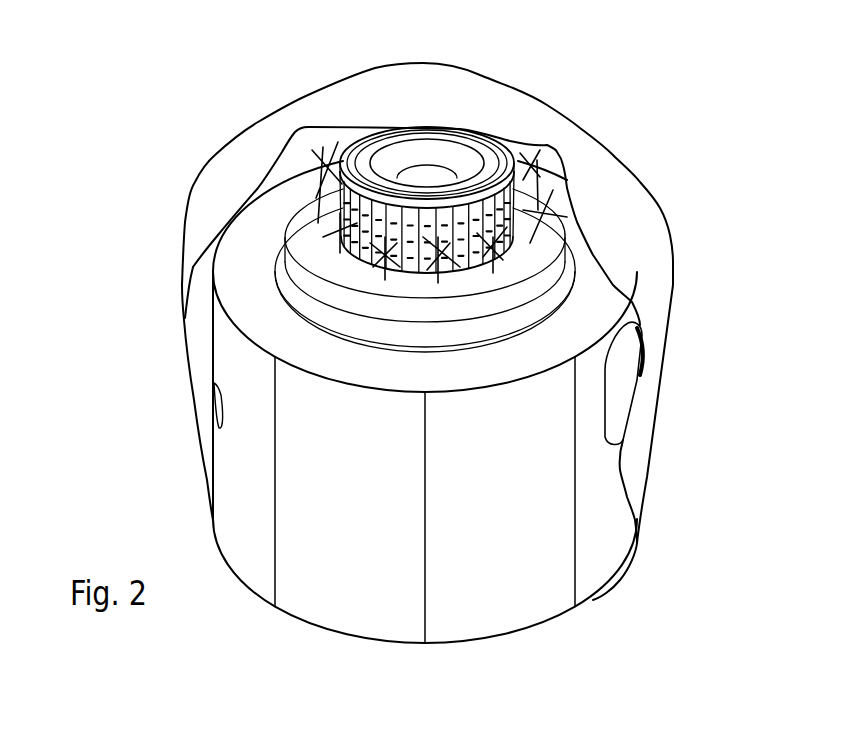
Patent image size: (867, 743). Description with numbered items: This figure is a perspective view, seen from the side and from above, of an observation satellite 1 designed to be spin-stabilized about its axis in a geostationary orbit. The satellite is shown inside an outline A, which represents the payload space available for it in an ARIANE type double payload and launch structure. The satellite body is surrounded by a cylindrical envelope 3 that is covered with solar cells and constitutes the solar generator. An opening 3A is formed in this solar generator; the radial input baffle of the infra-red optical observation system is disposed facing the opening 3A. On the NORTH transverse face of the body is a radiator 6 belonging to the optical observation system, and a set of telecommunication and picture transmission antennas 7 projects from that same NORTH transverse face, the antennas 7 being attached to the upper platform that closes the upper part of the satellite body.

The observation satellite 1 is at (167, 457).
The cylindrical envelope 3 is at (613, 590).
The opening 3A is at (605, 400).
The radiator 6 is at (454, 145).
The set of telecommunication and picture transmission antennas 7 is at (560, 212).
The outline A is at (672, 257).